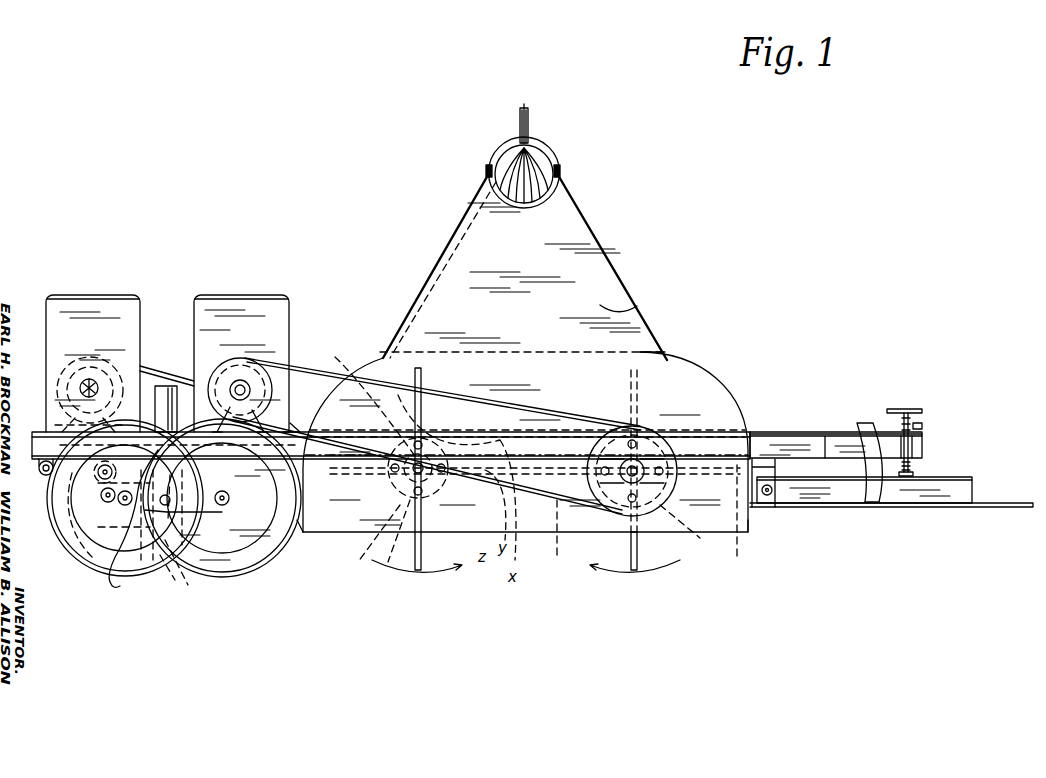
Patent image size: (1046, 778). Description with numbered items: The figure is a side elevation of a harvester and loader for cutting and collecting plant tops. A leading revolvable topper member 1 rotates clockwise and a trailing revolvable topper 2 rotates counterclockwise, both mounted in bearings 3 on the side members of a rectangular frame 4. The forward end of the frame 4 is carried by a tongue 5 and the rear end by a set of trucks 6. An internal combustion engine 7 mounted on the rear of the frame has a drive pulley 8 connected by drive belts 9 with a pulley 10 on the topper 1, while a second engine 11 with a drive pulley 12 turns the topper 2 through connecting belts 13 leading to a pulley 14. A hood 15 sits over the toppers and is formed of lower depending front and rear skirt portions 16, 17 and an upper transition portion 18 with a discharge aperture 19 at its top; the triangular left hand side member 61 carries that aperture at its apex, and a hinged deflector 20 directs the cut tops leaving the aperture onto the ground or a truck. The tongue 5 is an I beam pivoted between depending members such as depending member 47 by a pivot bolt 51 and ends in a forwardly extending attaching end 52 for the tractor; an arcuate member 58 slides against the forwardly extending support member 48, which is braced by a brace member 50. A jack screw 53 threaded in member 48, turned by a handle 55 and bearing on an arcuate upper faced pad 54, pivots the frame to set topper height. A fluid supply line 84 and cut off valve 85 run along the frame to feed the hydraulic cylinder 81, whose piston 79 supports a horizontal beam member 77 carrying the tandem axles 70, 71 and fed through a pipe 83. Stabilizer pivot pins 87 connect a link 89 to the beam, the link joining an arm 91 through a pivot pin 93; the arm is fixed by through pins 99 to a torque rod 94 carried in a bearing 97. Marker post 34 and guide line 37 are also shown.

The leading revolvable topper member 1 is at (648, 446).
The trailing revolvable topper 2 is at (419, 450).
The bearings 3 is at (700, 545).
The rectangular frame 4 is at (711, 446).
The tongue 5 is at (960, 477).
The trucks 6 is at (210, 507).
The internal combustion engine 7 is at (276, 318).
The drive pulley 8 is at (258, 372).
The drive belts 9 is at (318, 380).
The pulley 10 is at (650, 447).
The engine 11 is at (106, 309).
The drive pulley 12 is at (130, 375).
The connecting belts 13 is at (162, 368).
The pulley 14 is at (414, 500).
The hood 15 is at (662, 363).
The front skirt portion 16 is at (752, 528).
The rear skirt portion 17 is at (303, 533).
The transition portion 18 is at (600, 266).
The discharge aperture 19 is at (541, 192).
The deflector 20 is at (549, 131).
The marker post 34 is at (638, 548).
The guide line 37 is at (653, 520).
The depending member 47 is at (776, 468).
The forwardly extending support member 48 is at (845, 446).
The brace member 50 is at (795, 446).
The pivot bolt 51 is at (771, 494).
The attaching end 52 is at (1002, 503).
The jack screw 53 is at (922, 425).
The arcuate upper faced pad 54 is at (910, 472).
The handle 55 is at (912, 408).
The arcuate member 58 is at (895, 495).
The left hand side member 61 is at (628, 314).
The tandem axle 70 is at (229, 504).
The tandem axle 71 is at (133, 525).
The horizontal beam member 77 is at (186, 533).
The pistons 79 is at (121, 540).
The hydraulic cylinder 81 is at (180, 387).
The pipe 83 is at (292, 431).
The fluid supply line 84 is at (830, 432).
The cut off valve 85 is at (923, 429).
The pivot pins 87 is at (76, 565).
The link 89 is at (74, 551).
The arm 91 is at (90, 500).
The pivot pin 93 is at (70, 533).
The torque rod 94 is at (60, 490).
The bearing 97 is at (41, 472).
The through pins 99 is at (36, 433).